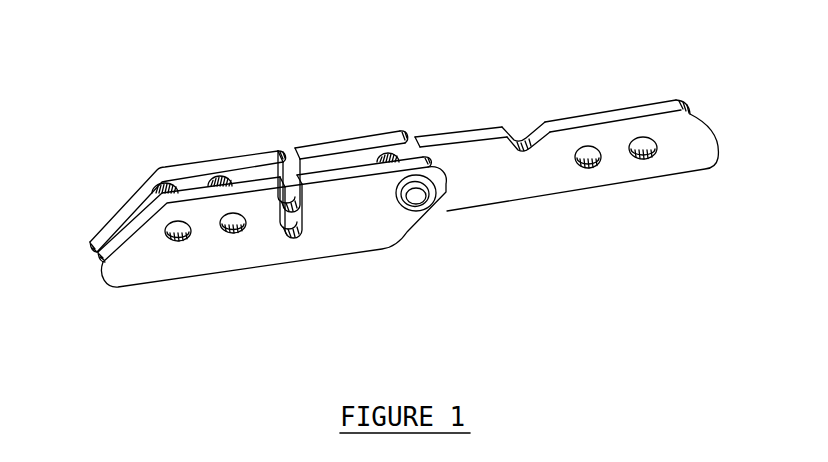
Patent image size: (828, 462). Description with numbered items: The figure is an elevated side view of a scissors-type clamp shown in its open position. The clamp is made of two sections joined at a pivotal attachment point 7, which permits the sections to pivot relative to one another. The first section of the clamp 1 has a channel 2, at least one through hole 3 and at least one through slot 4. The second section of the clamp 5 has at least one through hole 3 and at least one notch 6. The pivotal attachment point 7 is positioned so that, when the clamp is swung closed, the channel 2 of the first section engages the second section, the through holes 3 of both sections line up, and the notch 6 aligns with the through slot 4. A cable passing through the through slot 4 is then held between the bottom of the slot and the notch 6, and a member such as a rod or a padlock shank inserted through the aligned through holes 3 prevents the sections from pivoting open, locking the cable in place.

The first section of the clamp 1 is at (140, 262).
The channel 2 is at (110, 238).
The through hole 3 is at (232, 232).
The through slot 4 is at (297, 210).
The second section of the clamp 5 is at (683, 140).
The notch 6 is at (532, 128).
The pivotal attachment point 7 is at (413, 197).